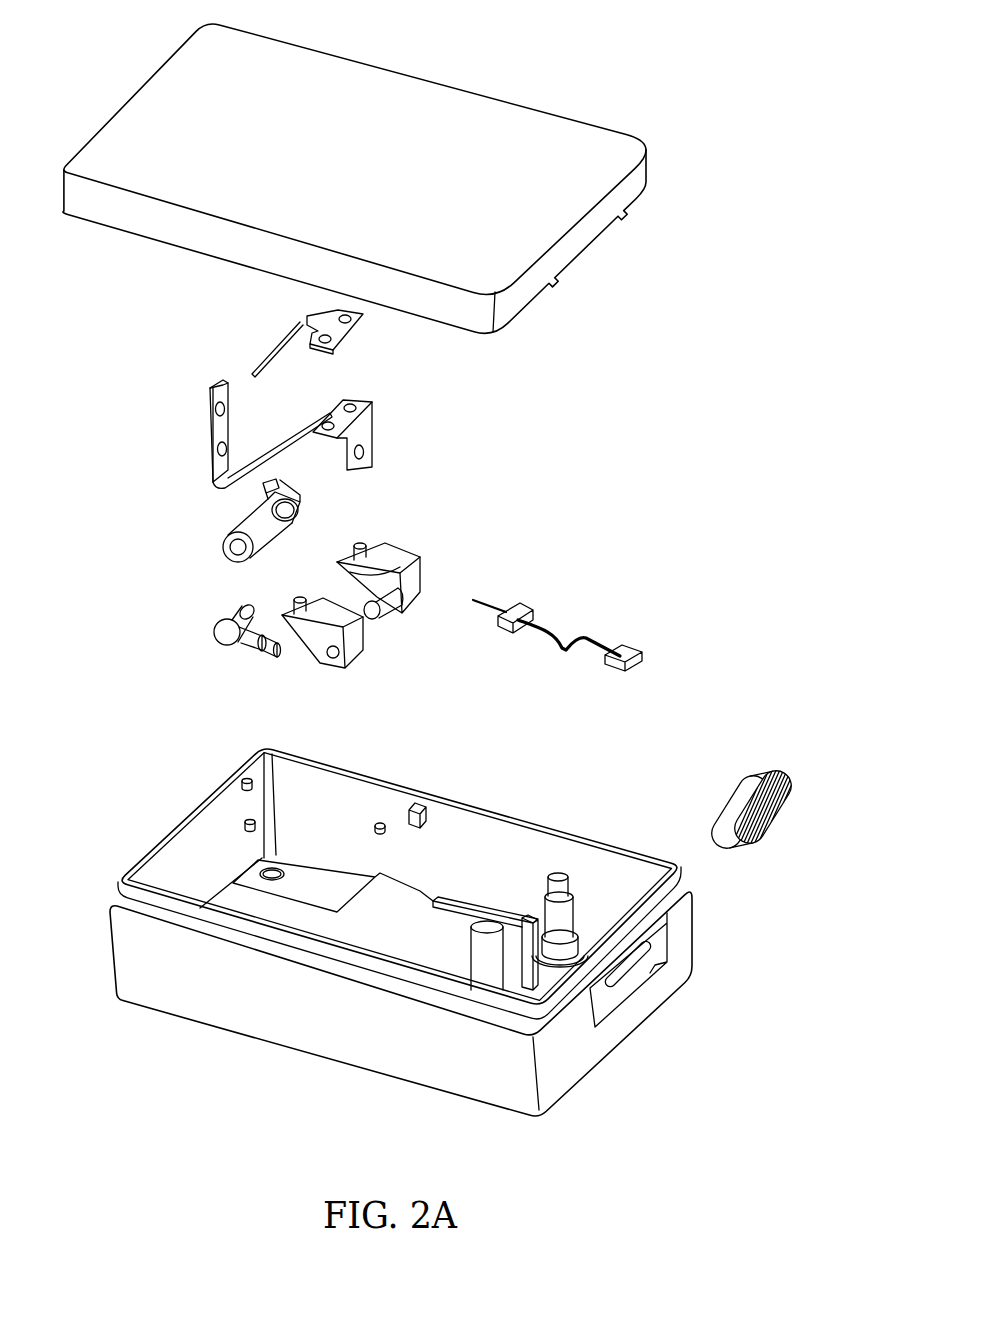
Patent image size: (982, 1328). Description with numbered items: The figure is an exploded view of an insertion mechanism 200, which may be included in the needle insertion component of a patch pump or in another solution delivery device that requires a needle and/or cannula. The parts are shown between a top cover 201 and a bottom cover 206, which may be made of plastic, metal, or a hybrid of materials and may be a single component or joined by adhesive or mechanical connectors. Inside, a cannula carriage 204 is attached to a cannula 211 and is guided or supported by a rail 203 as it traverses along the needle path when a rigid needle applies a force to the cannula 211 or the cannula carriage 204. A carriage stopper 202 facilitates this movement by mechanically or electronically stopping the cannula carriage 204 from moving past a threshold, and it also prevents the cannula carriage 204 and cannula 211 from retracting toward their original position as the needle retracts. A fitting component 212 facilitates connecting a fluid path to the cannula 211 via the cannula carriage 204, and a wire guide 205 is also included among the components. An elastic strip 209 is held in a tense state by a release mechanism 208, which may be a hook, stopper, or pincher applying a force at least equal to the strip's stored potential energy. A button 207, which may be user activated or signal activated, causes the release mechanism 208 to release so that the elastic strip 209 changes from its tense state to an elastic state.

The insertion mechanism 200 is at (688, 62).
The top cover 201 is at (575, 142).
The carriage stopper 202 is at (352, 333).
The rail 203 is at (375, 455).
The cannula carriage 204 is at (290, 512).
The wire guide 205 is at (410, 608).
The bottom cover 206 is at (577, 1053).
The button 207 is at (773, 765).
The release mechanism 208 is at (565, 640).
The elastic strip 209 is at (603, 645).
The cannula 211 is at (487, 603).
The fitting component 212 is at (222, 640).